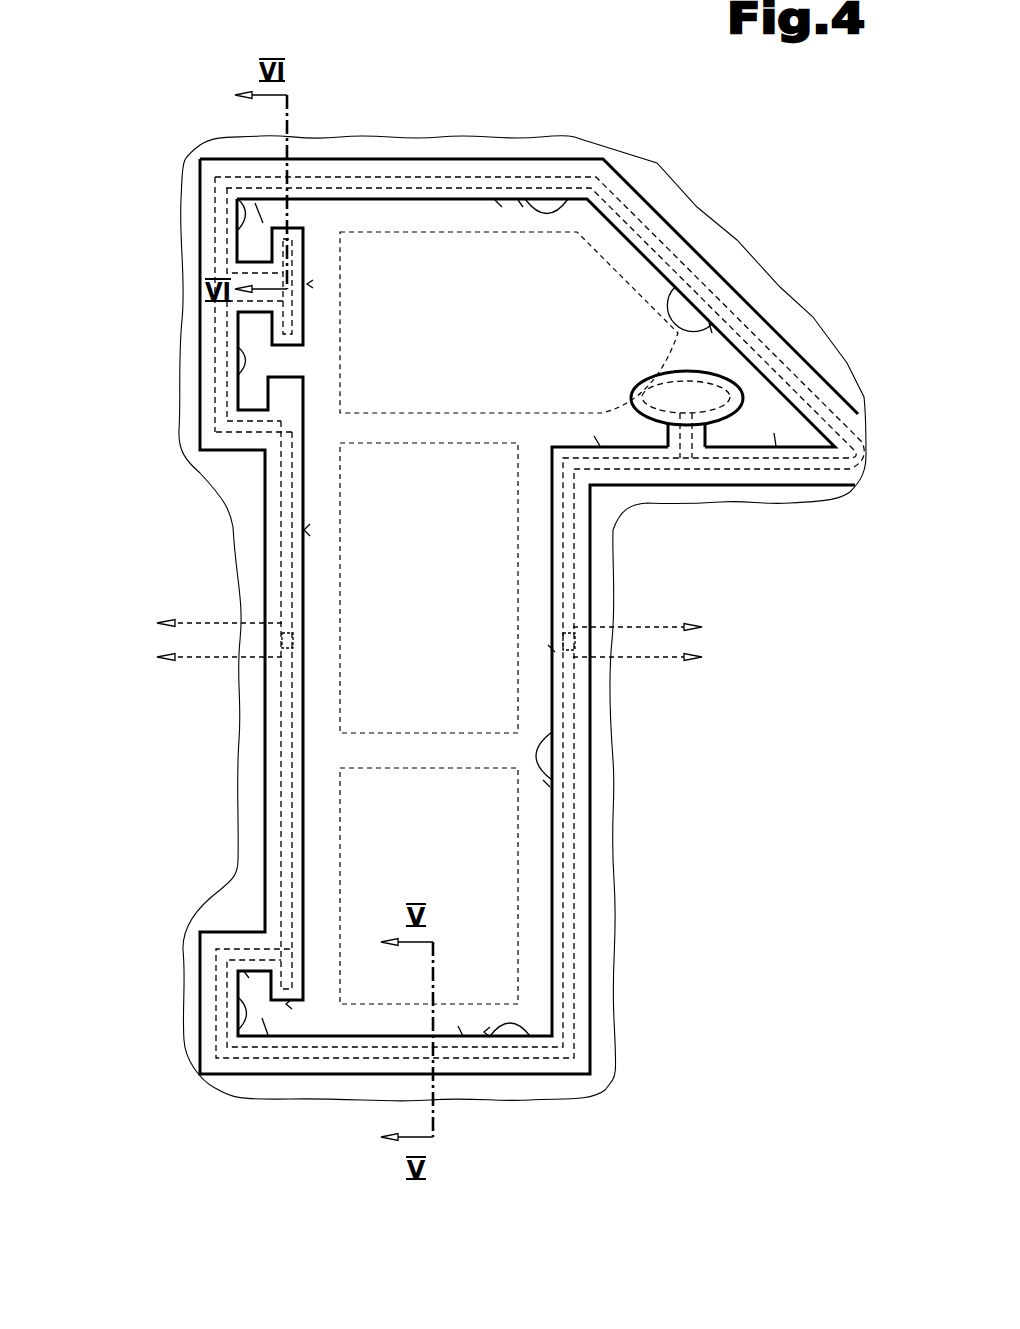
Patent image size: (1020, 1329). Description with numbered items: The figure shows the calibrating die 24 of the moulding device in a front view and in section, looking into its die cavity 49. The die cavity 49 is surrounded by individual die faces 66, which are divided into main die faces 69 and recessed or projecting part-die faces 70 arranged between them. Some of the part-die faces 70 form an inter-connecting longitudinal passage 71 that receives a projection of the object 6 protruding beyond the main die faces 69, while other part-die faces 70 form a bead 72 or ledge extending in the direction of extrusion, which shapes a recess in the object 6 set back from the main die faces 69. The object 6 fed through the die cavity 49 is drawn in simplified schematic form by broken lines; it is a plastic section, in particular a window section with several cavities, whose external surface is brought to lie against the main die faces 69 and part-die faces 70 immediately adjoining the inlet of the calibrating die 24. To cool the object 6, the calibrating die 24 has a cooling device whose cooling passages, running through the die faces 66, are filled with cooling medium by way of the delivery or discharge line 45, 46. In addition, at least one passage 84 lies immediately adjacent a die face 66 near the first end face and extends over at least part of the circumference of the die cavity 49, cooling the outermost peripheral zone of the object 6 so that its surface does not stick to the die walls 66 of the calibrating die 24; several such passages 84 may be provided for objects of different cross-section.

The object 6 is at (472, 220).
The calibrating die 24 is at (180, 330).
The delivery line 45 is at (201, 656).
The discharge line 46 is at (660, 622).
The die cavity 49 is at (396, 647).
The die faces 66 is at (568, 199).
The main die faces 69 is at (680, 298).
The part-die faces 70 is at (290, 218).
The longitudinal passage 71 is at (258, 213).
The bead 72 is at (700, 393).
The passage 84 is at (284, 607).